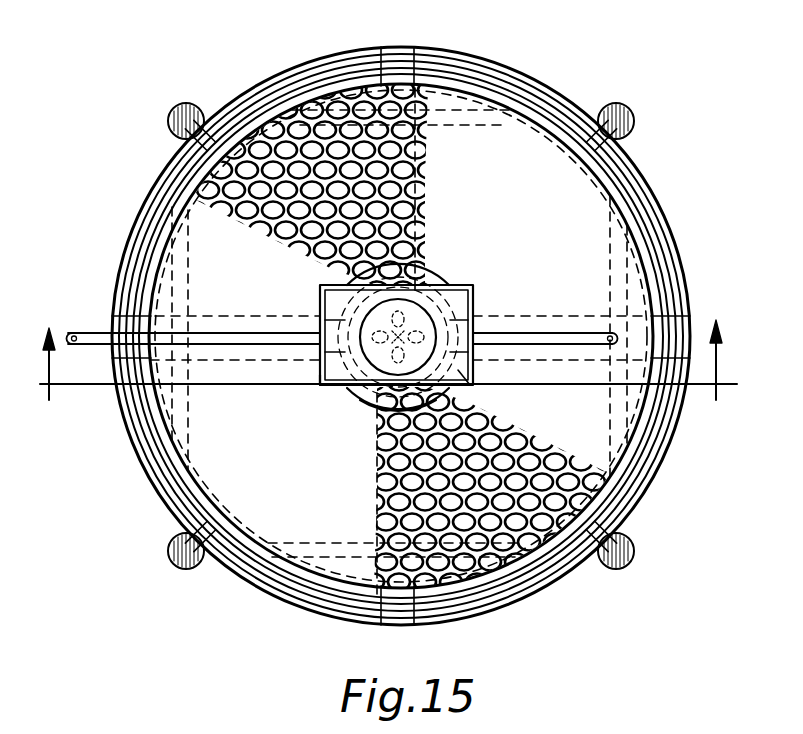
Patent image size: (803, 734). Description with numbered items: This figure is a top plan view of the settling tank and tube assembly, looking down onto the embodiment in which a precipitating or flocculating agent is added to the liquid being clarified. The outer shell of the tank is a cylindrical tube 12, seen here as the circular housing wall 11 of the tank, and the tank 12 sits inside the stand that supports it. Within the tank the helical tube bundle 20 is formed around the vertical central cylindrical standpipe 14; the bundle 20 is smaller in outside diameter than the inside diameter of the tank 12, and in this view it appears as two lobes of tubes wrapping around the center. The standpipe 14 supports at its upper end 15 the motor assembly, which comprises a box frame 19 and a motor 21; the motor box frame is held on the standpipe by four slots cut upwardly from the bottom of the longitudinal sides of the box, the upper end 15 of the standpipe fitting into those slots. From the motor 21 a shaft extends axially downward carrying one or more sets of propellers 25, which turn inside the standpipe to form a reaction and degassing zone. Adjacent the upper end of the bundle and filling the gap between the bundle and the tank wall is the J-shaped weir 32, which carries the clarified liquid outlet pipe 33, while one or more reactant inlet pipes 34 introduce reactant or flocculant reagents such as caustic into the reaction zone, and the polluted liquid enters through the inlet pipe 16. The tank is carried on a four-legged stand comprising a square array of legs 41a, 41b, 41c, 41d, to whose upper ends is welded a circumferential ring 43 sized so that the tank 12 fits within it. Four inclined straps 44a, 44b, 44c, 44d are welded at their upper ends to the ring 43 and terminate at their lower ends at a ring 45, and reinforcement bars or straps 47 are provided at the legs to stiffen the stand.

The housing wall 11 is at (676, 290).
The cylindrical tube 12 is at (652, 462).
The vertical central cylindrical standpipe 14 is at (376, 368).
The upper end of the standpipe 15 is at (442, 288).
The inlet pipe 16 is at (511, 333).
The box frame 19 is at (318, 389).
The helical tube bundle 20 is at (422, 190).
The motor 21 is at (416, 284).
The propellers 25 is at (472, 380).
The J-shaped weir 32 is at (668, 236).
The clarified liquid outlet pipe 33 is at (92, 333).
The reactant inlet pipe 34 is at (272, 334).
The leg 41a is at (636, 556).
The leg 41b is at (168, 551).
The leg 41c is at (170, 112).
The leg 41d is at (632, 112).
The circumferential ring 43 is at (657, 214).
The inclined strap 44a is at (596, 316).
The inclined strap 44b is at (375, 513).
The inclined strap 44c is at (212, 316).
The inclined strap 44d is at (410, 58).
The ring 45 is at (365, 412).
The reinforcement strap 47 is at (203, 110).